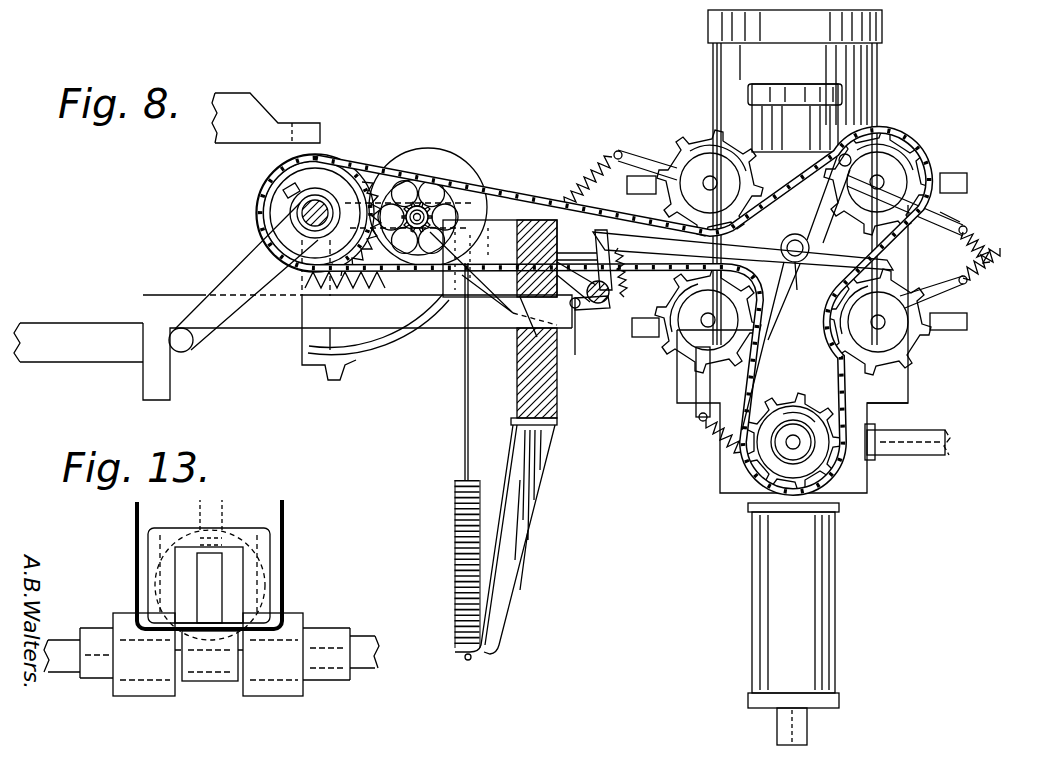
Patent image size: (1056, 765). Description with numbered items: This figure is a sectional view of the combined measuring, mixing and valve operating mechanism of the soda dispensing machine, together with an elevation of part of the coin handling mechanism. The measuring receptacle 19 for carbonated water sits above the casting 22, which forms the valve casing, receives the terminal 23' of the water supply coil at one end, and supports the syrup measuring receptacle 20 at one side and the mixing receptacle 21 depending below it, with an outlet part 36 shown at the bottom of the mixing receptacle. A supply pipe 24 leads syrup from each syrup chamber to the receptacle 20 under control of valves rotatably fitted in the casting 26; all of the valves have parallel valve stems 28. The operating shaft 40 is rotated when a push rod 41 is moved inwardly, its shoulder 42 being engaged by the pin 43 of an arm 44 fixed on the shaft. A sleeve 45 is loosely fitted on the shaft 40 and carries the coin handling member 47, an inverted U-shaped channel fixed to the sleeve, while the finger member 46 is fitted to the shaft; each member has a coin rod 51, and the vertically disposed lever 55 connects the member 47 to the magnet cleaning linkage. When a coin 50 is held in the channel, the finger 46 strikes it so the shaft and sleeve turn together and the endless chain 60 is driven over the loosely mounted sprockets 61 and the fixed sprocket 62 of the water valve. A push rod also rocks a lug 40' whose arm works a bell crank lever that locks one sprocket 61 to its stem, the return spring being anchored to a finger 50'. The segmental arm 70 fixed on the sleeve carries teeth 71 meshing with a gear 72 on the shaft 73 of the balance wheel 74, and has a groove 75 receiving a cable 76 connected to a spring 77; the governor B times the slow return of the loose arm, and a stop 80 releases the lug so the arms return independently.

In FIG. 8, the measuring receptacle 19 is at (860, 95).
In FIG. 8, the measuring receptacle 20 is at (795, 118).
In FIG. 8, the mixing receptacle 21 is at (822, 604).
In FIG. 8, the casting 22 is at (862, 482).
In FIG. 8, the terminal of the water supply pipe 23' is at (909, 430).
In FIG. 8, the supply pipe 24 is at (636, 185).
In FIG. 8, the casting 26 is at (772, 346).
In FIG. 8, the valve stem 28 is at (793, 252).
In FIG. 8, the motor shaft 36 is at (812, 727).
In FIG. 8, the operating shaft 40 is at (439, 381).
In FIG. 13, the operating shaft 40 is at (225, 643).
In FIG. 8, the lug 40' is at (583, 342).
In FIG. 8, the push rod 41 is at (55, 333).
In FIG. 8, the shoulder 42 is at (170, 374).
In FIG. 8, the pin 43 is at (169, 340).
In FIG. 8, the arm 44 is at (262, 262).
In FIG. 13, the sleeve 45 is at (322, 628).
In FIG. 13, the coin handling member 46 is at (210, 580).
In FIG. 13, the coin handling member 47 is at (268, 588).
In FIG. 8, the coin 50 is at (296, 213).
In FIG. 13, the coin 50 is at (210, 569).
In FIG. 8, the finger 50' is at (969, 205).
In FIG. 13, the coin rod 51 is at (214, 515).
In FIG. 13, the vertically disposed lever 55 is at (136, 522).
In FIG. 8, the endless chain 60 is at (490, 190).
In FIG. 8, the sprocket 61 is at (692, 143).
In FIG. 8, the sprocket 62 is at (760, 460).
In FIG. 8, the segmental arm 70 is at (313, 277).
In FIG. 8, the teeth 71 is at (374, 292).
In FIG. 8, the gear 72 is at (420, 200).
In FIG. 8, the shaft 73 is at (437, 192).
In FIG. 8, the balance wheel 74 is at (410, 160).
In FIG. 8, the groove 75 is at (396, 337).
In FIG. 8, the cable 76 is at (470, 368).
In FIG. 8, the spring 77 is at (457, 505).
In FIG. 8, the stop 80 is at (235, 118).
In FIG. 8, the governor B is at (416, 193).